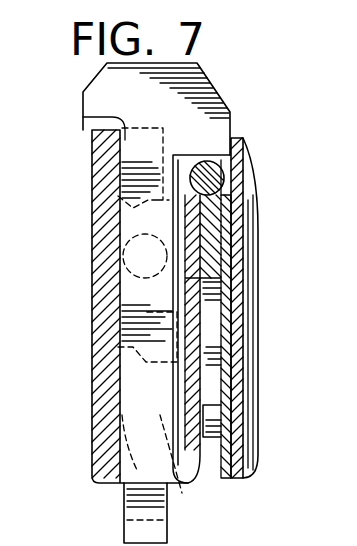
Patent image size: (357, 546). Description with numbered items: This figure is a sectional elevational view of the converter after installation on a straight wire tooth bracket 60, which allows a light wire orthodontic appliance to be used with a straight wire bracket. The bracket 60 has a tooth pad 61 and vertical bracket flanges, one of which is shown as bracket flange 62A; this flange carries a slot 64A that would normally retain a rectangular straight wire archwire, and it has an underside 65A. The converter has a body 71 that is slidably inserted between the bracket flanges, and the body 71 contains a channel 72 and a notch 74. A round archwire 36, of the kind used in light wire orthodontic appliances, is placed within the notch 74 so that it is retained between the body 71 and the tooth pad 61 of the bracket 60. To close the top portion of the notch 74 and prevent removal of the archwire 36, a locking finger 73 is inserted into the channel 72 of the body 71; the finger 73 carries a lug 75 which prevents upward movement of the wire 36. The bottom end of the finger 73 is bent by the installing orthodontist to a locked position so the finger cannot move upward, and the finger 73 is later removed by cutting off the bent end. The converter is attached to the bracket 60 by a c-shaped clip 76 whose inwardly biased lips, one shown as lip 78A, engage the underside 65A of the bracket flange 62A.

The round archwire 36 is at (226, 173).
The straight wire tooth bracket 60 is at (245, 131).
The tooth pad 61 is at (244, 150).
The bracket flange 62A is at (118, 191).
The slot 64A is at (118, 347).
The underside 65A is at (183, 493).
The body 71 is at (100, 288).
The channel 72 is at (83, 117).
The locking finger 73 is at (172, 97).
The notch 74 is at (226, 196).
The lug 75 is at (205, 158).
The c-shaped clip 76 is at (215, 247).
The lip 78A is at (213, 420).